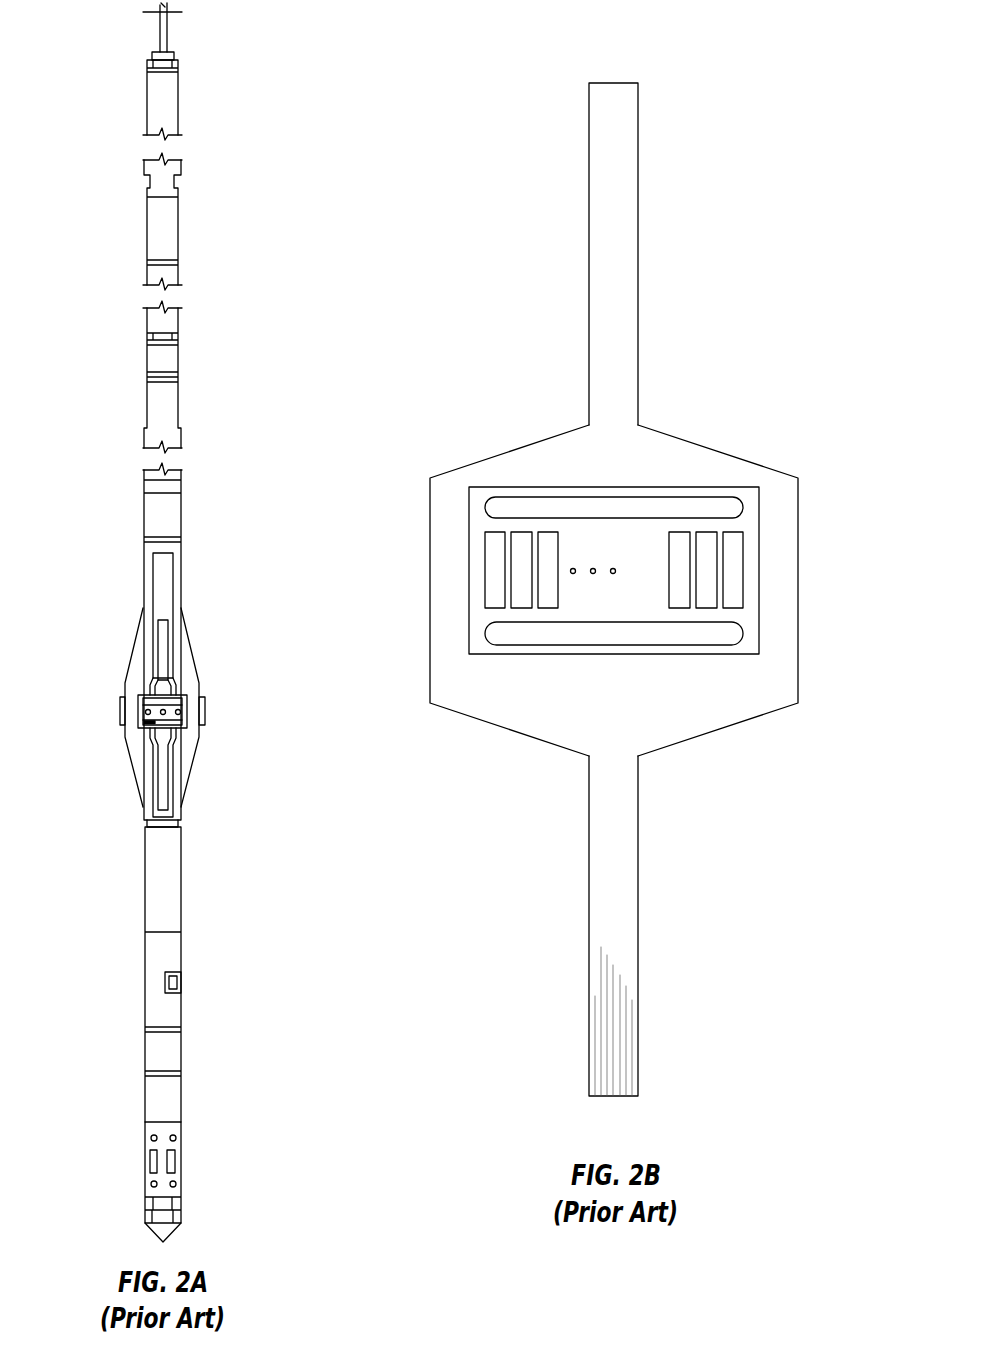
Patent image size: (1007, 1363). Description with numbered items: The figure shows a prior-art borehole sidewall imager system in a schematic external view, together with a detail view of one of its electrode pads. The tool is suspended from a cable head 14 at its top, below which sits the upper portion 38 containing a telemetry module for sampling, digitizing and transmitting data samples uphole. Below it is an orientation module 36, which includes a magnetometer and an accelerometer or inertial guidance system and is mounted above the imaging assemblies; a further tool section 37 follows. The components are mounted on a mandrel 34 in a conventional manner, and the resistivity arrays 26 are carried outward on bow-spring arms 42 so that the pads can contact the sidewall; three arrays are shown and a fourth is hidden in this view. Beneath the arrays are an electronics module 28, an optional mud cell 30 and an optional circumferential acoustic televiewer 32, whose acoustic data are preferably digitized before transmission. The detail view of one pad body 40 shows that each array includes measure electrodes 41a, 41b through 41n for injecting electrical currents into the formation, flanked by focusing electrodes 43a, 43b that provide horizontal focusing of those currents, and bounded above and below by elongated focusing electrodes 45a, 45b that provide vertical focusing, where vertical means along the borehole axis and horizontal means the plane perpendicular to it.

In FIG. 2A, the wireline cable head 14 is at (168, 42).
In FIG. 2A, the upper portion 38 is at (178, 92).
In FIG. 2A, the orientation module 36 is at (178, 237).
In FIG. 2A, the tool section 37 is at (178, 357).
In FIG. 2A, the mandrel 34 is at (181, 520).
In FIG. 2A, the bow spring arm 42 is at (132, 650).
In FIG. 2B, the bow spring arm 42 is at (639, 302).
In FIG. 2A, the resistivity array 26 is at (118, 702).
In FIG. 2A, the electronics module 28 is at (181, 878).
In FIG. 2A, the mud cell 30 is at (181, 982).
In FIG. 2A, the circumferential acoustic televiewer 32 is at (182, 1160).
In FIG. 2B, the pad body 40 is at (673, 437).
In FIG. 2B, the measure electrode 41a is at (524, 552).
In FIG. 2B, the measure electrode 41b is at (548, 595).
In FIG. 2B, the measure electrode 41n is at (703, 553).
In FIG. 2B, the focusing electrode 43a is at (495, 563).
In FIG. 2B, the focusing electrode 43b is at (737, 562).
In FIG. 2B, the focusing electrode 45a is at (562, 486).
In FIG. 2B, the focusing electrode 45b is at (733, 630).